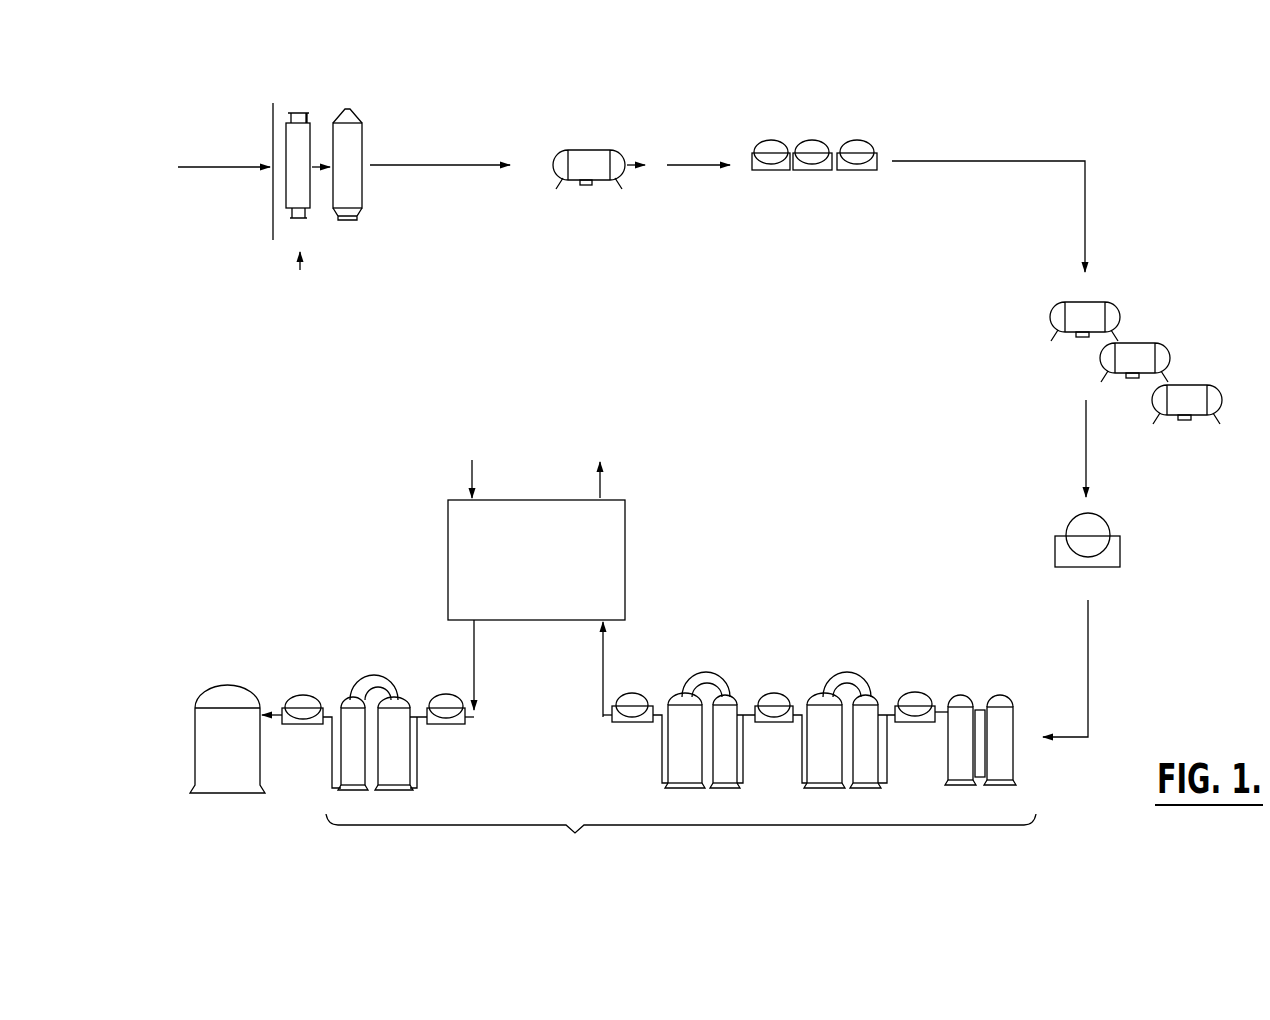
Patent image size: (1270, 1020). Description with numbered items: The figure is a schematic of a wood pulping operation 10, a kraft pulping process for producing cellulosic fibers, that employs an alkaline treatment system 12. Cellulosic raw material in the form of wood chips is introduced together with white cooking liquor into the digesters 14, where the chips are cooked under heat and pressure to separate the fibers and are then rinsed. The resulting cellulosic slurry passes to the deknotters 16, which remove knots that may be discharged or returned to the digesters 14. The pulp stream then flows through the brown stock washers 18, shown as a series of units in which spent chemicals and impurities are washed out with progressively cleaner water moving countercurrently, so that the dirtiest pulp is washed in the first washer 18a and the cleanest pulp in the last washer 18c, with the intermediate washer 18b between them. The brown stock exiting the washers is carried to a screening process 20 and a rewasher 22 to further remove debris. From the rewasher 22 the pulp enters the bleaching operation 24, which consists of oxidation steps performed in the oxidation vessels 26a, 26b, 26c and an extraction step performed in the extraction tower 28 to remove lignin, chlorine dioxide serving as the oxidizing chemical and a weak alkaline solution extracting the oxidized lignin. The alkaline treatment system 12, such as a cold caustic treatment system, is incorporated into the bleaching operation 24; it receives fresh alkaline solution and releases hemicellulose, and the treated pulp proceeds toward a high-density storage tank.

The wood pulping operation 10 is at (1113, 150).
The alkaline treatment system 12 is at (648, 534).
The digesters 14 is at (372, 127).
The deknotters 16 is at (668, 125).
The brown stock washers 18 is at (888, 122).
The first washer 18a is at (752, 171).
The brown stock washer 18b is at (825, 171).
The last washer 18c is at (877, 171).
The screening process 20 is at (1043, 366).
The rewasher 22 is at (1142, 543).
The bleaching operation 24 is at (618, 735).
The oxidation vessel 26a is at (968, 660).
The oxidation vessel 26b is at (720, 665).
The oxidation vessel 26c is at (352, 668).
The extraction tower 28 is at (845, 665).